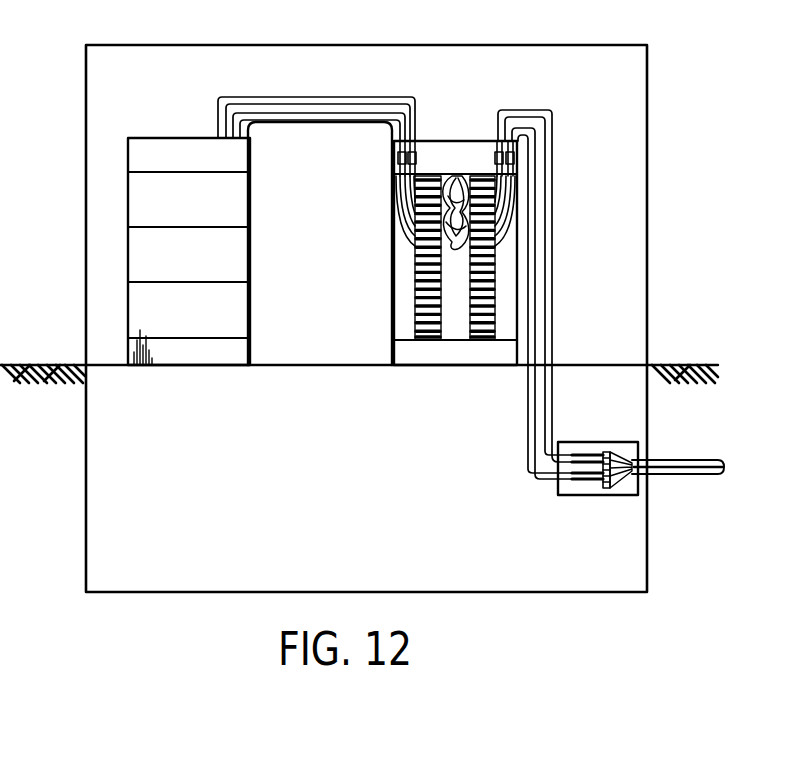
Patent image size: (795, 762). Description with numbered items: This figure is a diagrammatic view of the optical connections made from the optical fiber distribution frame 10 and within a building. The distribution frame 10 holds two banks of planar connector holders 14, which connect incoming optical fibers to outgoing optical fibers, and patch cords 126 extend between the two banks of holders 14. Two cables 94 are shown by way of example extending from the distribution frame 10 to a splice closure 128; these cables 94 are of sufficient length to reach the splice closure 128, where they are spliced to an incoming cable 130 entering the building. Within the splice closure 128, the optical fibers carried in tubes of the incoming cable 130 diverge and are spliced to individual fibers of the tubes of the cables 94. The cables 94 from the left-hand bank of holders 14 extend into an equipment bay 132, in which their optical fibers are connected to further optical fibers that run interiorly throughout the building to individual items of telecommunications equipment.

The optical fiber distribution frame 10 is at (484, 132).
The connector holders 14 is at (414, 263).
The cables 94 is at (346, 110).
The patch cords 126 is at (454, 176).
The splice closure 128 is at (568, 495).
The incoming cable 130 is at (683, 460).
The equipment bay 132 is at (128, 268).